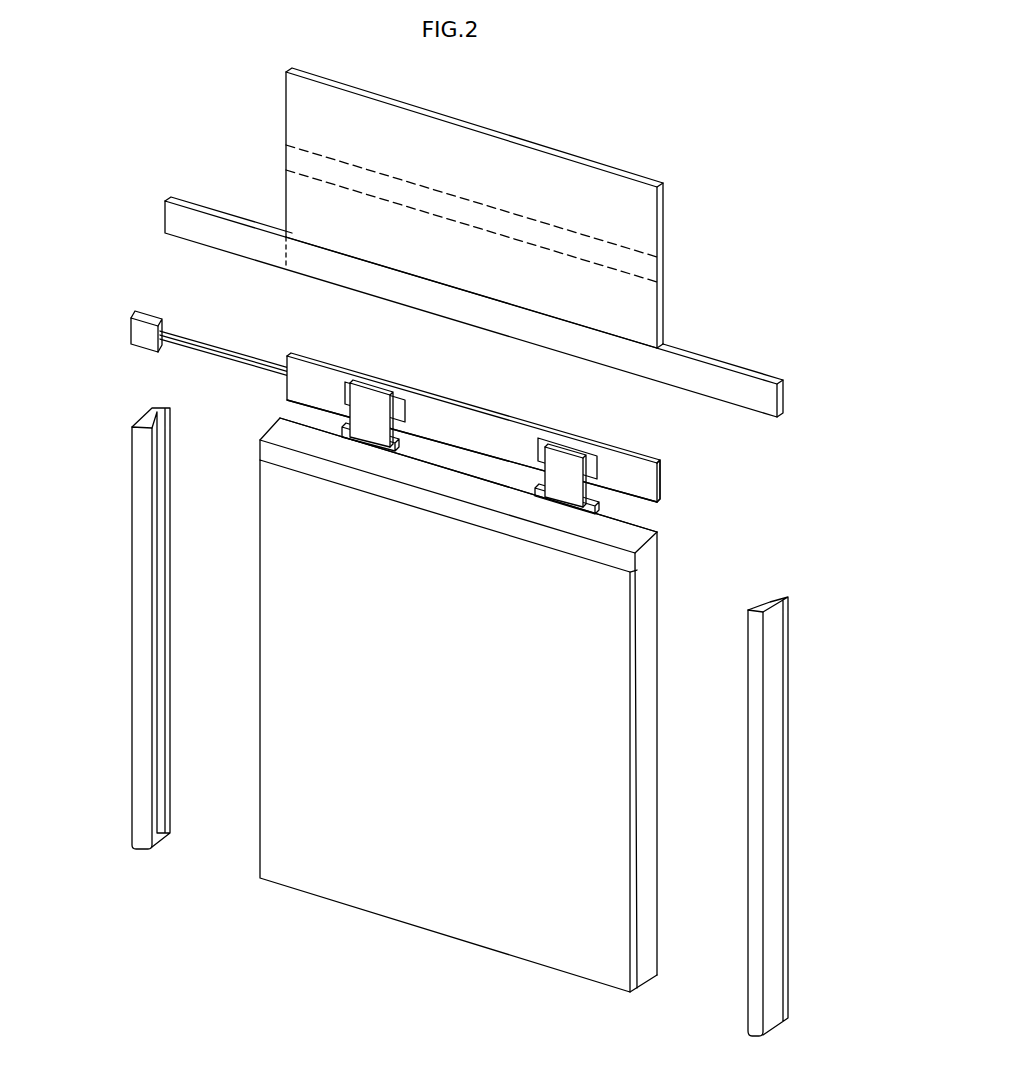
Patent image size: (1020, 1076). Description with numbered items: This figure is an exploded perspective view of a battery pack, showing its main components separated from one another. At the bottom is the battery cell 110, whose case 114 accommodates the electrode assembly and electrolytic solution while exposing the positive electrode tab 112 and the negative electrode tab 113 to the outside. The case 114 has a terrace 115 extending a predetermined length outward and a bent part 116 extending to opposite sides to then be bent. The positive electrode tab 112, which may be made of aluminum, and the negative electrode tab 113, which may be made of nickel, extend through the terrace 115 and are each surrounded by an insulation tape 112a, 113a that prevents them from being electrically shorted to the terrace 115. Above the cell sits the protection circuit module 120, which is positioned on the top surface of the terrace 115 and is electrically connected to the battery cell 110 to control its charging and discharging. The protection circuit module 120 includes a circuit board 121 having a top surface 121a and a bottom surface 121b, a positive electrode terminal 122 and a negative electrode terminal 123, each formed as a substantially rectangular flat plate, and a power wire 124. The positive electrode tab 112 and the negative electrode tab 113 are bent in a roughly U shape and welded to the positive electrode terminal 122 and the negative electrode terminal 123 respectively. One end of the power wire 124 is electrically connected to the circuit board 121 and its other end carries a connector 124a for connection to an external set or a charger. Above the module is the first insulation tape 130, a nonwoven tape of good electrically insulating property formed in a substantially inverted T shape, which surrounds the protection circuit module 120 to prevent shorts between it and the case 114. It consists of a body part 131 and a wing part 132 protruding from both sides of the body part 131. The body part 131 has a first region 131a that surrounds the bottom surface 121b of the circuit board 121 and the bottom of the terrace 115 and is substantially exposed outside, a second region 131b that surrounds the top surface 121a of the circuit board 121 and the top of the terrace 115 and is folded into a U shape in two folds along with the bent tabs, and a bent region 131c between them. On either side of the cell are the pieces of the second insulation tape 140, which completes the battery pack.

The battery cell 110 is at (462, 670).
The positive electrode tab 112 is at (372, 400).
The insulation tape 112a is at (343, 428).
The negative electrode tab 113 is at (565, 460).
The insulation tape 113a is at (535, 487).
The case 114 is at (423, 915).
The terrace 115 is at (640, 523).
The bent part 116 is at (652, 598).
The protection circuit module 120 is at (420, 390).
The circuit board 121 is at (522, 421).
The top surface of circuit board 121a is at (643, 490).
The bottom surface of circuit board 121b is at (660, 472).
The positive electrode terminal 122 is at (398, 402).
The negative electrode terminal 123 is at (593, 457).
The power wire 124 is at (191, 338).
The connector 124a is at (138, 342).
The first insulation tape 130 is at (515, 242).
The body part 131 is at (544, 208).
The first region 131a is at (742, 227).
The second region 131b is at (647, 233).
The bent region 131c is at (647, 268).
The wing part 132 is at (753, 388).
The second insulation tape 140 is at (130, 610).